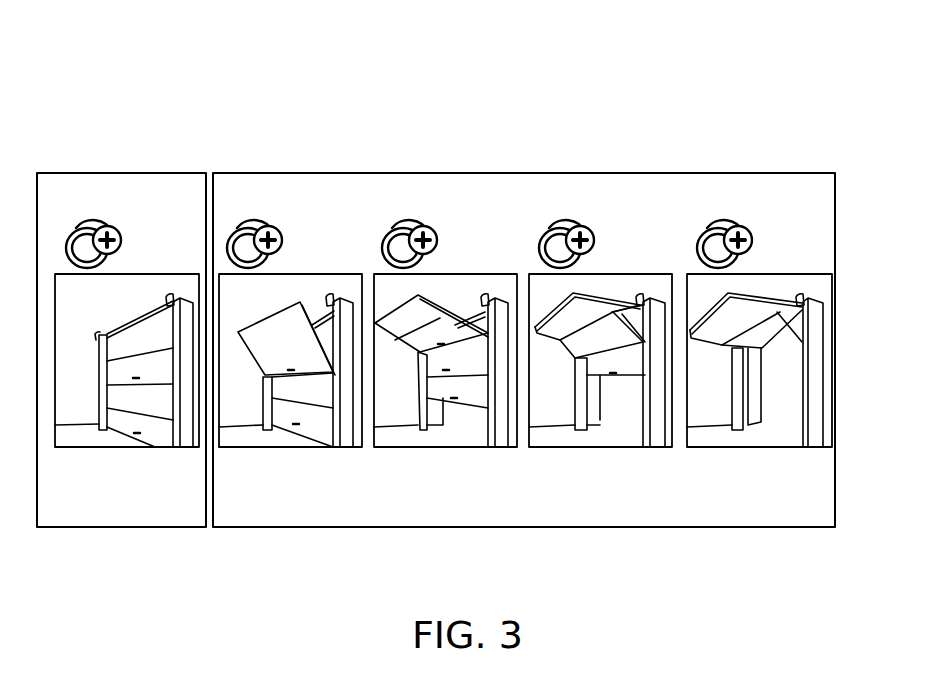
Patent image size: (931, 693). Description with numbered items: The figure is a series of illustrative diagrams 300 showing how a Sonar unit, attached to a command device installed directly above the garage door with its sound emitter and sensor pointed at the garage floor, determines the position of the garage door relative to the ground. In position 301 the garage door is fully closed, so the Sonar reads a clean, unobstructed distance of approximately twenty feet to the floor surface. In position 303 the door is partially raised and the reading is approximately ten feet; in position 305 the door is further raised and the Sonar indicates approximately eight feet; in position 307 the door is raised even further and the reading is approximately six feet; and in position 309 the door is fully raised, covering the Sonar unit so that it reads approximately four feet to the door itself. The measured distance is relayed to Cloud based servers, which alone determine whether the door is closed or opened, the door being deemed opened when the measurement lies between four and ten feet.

The garage door opening sequence diagram 300 is at (436, 352).
The fully closed position 301 is at (132, 285).
The partially raised position 303 is at (298, 285).
The further raised position 305 is at (465, 285).
The even further raised position 307 is at (625, 285).
The fully raised position 309 is at (770, 285).